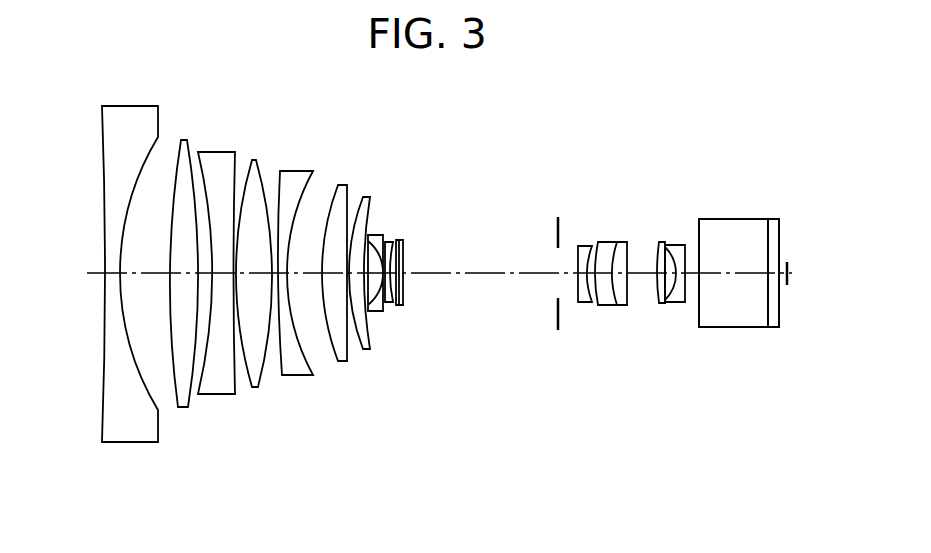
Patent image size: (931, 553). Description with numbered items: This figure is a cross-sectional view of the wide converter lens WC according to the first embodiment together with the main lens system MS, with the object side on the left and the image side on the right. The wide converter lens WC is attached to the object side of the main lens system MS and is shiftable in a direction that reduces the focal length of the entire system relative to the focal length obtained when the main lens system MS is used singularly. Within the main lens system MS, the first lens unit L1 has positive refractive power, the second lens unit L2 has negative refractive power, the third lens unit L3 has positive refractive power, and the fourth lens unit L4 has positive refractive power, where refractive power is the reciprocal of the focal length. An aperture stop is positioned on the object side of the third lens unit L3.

The wide converter lens WC is at (87, 102).
The main lens system MS is at (544, 306).
The first lens unit L1 is at (277, 379).
The second lens unit L2 is at (376, 379).
The third lens unit L3 is at (624, 381).
The fourth lens unit L4 is at (671, 334).